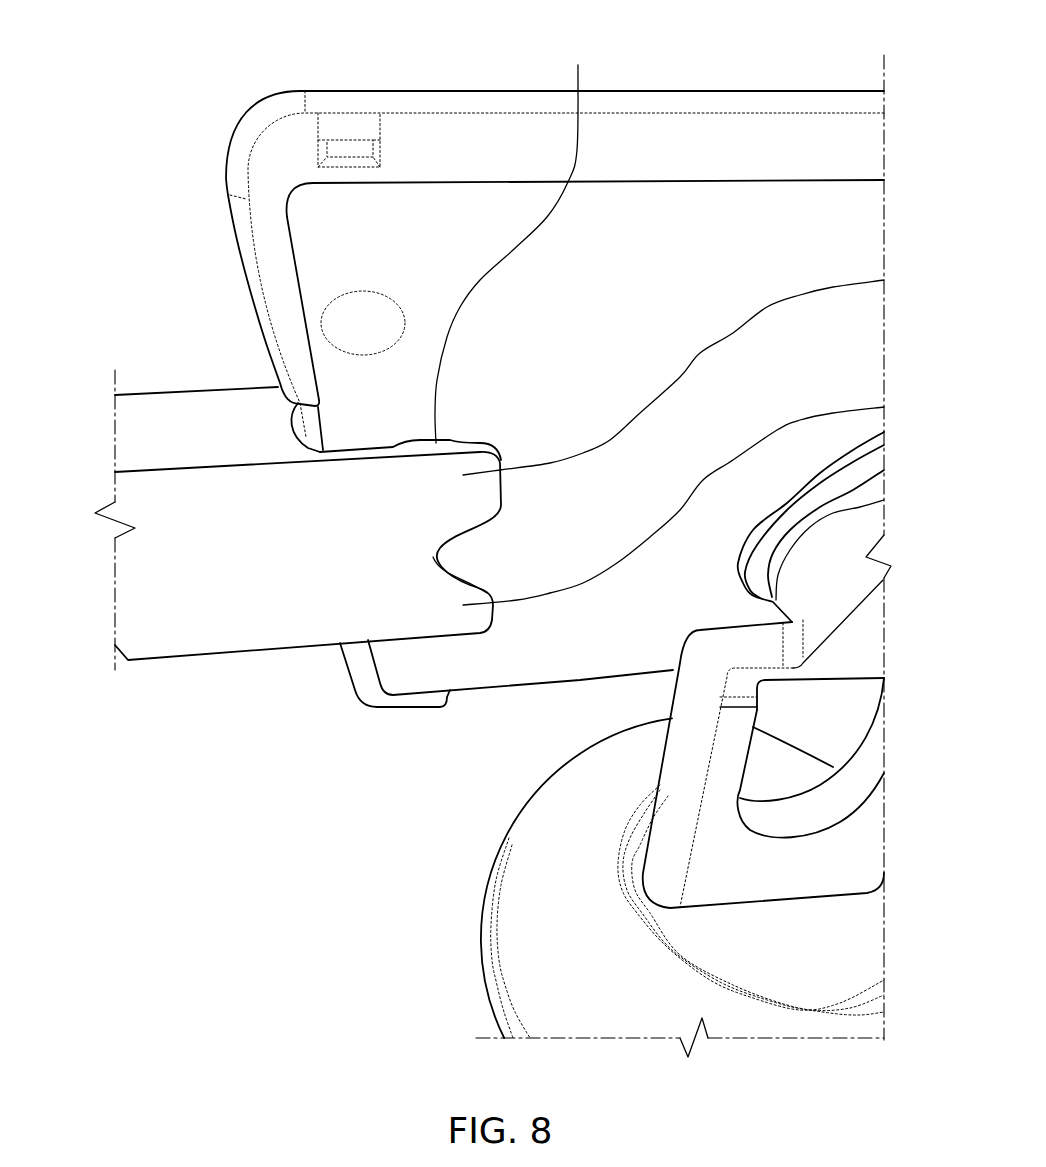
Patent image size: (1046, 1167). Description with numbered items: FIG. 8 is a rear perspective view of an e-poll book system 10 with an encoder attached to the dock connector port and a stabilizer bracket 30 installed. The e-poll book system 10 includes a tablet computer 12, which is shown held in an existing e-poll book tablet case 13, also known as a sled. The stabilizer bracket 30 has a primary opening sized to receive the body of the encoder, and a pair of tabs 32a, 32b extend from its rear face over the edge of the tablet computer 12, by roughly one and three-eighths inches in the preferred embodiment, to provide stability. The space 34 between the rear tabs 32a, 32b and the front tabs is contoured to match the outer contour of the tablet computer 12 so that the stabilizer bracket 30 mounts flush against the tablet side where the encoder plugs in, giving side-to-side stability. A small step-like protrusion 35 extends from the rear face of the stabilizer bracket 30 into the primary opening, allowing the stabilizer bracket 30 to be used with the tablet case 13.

The e-poll book system 10 is at (224, 82).
The tablet computer 12 is at (752, 80).
The e-poll book tablet case 13 is at (423, 140).
The stabilizer bracket 30 is at (106, 402).
The rear tab 32a is at (884, 407).
The rear tab 32b is at (884, 280).
The space 34 is at (290, 396).
The step-like protrusion 35 is at (513, 242).